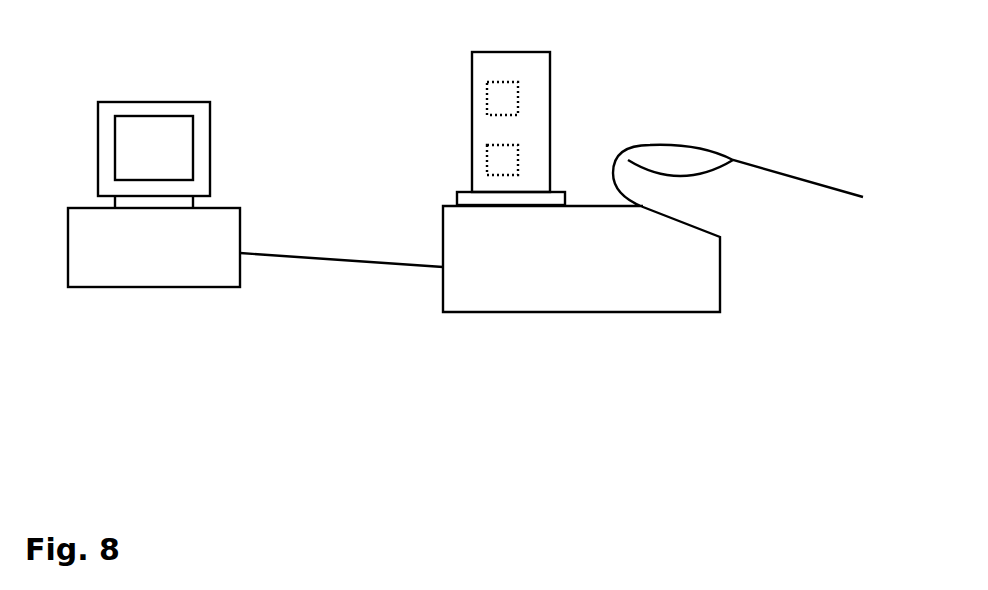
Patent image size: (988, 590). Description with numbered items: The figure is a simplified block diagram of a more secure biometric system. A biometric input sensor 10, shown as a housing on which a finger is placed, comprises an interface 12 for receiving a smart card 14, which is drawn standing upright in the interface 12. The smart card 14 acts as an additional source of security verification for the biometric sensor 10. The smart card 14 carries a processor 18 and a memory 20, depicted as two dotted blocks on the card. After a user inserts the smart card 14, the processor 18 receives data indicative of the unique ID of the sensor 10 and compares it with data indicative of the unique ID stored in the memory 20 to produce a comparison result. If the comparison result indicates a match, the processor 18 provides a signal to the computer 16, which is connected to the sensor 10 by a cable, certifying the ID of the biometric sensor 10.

The biometric input sensor 10 is at (705, 295).
The interface 12 is at (457, 192).
The smart card 14 is at (472, 130).
The computer 16 is at (117, 270).
The processor 18 is at (502, 100).
The memory 20 is at (502, 158).